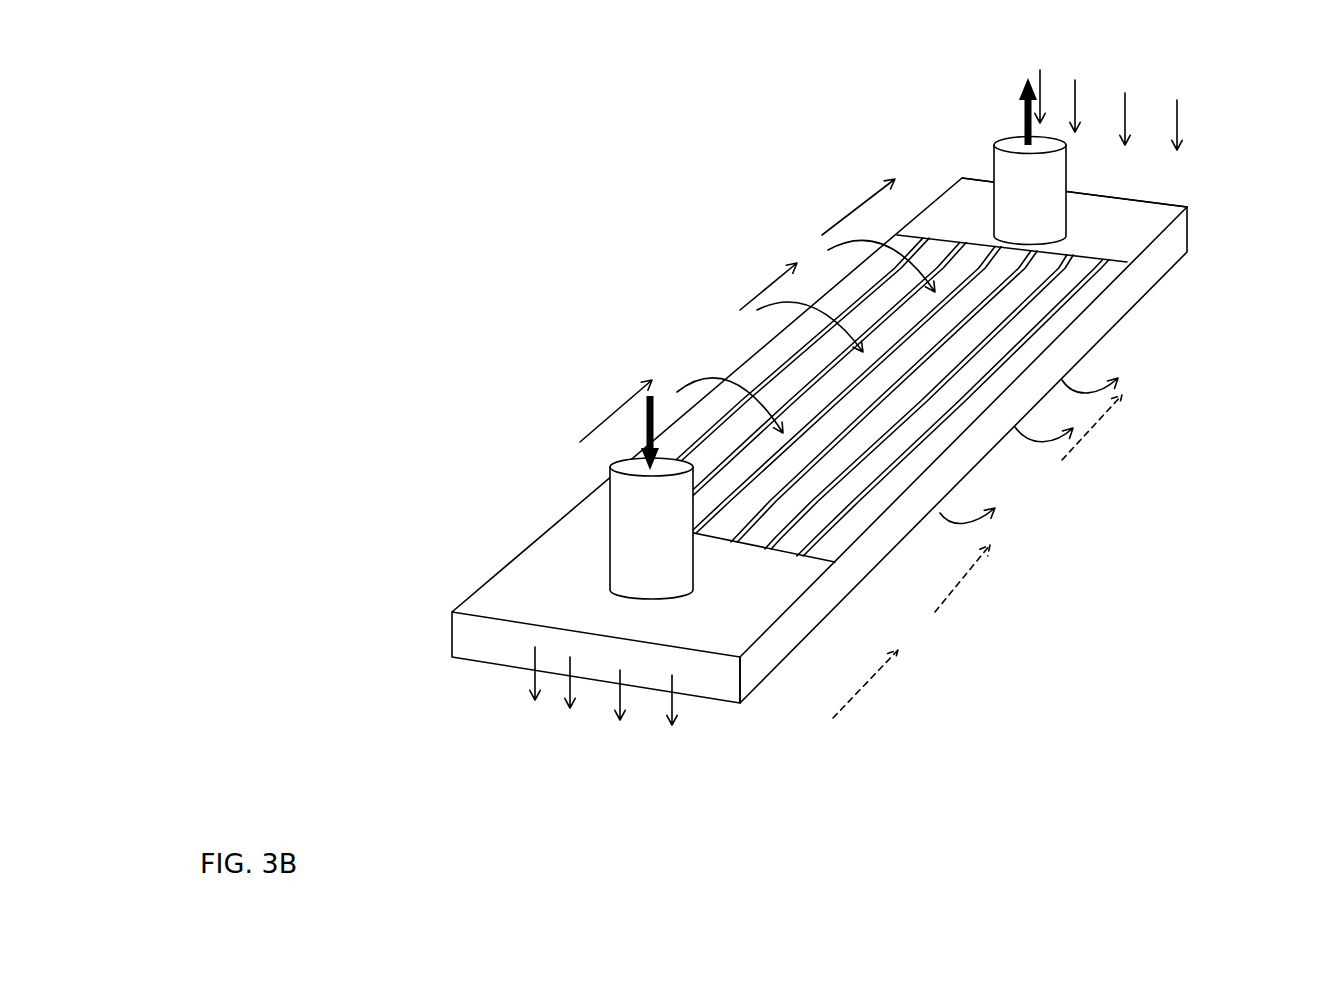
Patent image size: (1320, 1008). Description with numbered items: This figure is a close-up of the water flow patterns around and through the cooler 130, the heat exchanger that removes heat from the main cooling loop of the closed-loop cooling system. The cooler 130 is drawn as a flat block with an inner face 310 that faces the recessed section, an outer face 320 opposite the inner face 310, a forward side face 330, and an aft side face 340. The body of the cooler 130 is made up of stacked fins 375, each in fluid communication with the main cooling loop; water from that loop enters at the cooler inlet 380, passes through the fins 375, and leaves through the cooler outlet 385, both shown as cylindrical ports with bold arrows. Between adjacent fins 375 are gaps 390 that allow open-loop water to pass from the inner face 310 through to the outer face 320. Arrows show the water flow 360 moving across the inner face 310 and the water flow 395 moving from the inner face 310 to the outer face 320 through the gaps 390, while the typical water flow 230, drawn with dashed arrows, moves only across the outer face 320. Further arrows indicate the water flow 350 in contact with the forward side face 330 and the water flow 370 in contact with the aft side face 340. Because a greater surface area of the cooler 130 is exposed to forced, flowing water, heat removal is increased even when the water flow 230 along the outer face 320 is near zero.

The cooler 130 is at (330, 446).
The water flow 230 is at (938, 612).
The inner face 310 is at (752, 372).
The outer face 320 is at (1143, 335).
The forward side face 330 is at (1166, 180).
The aft side face 340 is at (482, 641).
The water flow 350 is at (530, 674).
The water flow 360 is at (853, 210).
The water flow 370 is at (1178, 123).
The fins 375 is at (1067, 283).
The cooler inlet 380 is at (598, 518).
The cooler outlet 385 is at (980, 158).
The gaps 390 is at (910, 447).
The water flow 395 is at (690, 388).